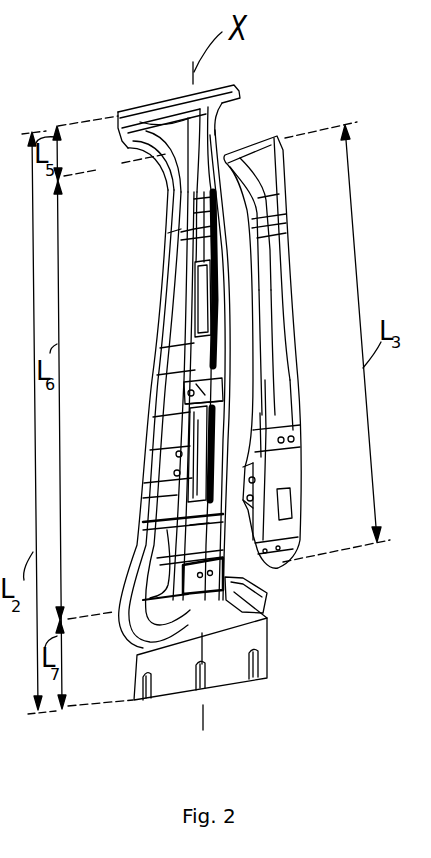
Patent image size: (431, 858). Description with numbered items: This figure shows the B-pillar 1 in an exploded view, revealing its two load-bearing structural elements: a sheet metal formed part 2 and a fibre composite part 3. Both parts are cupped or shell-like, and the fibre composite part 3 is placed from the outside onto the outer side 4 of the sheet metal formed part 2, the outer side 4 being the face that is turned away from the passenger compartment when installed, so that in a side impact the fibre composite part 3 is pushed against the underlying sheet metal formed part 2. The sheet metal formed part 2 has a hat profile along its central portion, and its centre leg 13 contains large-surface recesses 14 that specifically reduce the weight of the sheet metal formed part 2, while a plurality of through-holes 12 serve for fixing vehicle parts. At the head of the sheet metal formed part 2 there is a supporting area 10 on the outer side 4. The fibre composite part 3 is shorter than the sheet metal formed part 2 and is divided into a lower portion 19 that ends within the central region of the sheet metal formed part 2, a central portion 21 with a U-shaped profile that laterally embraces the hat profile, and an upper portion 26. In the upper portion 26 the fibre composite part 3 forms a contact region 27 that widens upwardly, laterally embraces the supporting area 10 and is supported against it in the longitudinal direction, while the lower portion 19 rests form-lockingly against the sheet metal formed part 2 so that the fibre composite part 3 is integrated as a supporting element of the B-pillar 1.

The B-pillar 1 is at (271, 94).
The sheet metal formed part 2 is at (170, 214).
The fibre composite part 3 is at (285, 268).
The outer side 4 is at (198, 240).
The supporting area 10 is at (178, 122).
The through-holes 12 is at (180, 454).
The centre leg 13 is at (207, 390).
The large-surface recesses 14 is at (203, 322).
The lower portion 19 is at (304, 545).
The central portion 21 is at (296, 397).
The upper portion 26 is at (283, 168).
The contact region 27 is at (263, 157).